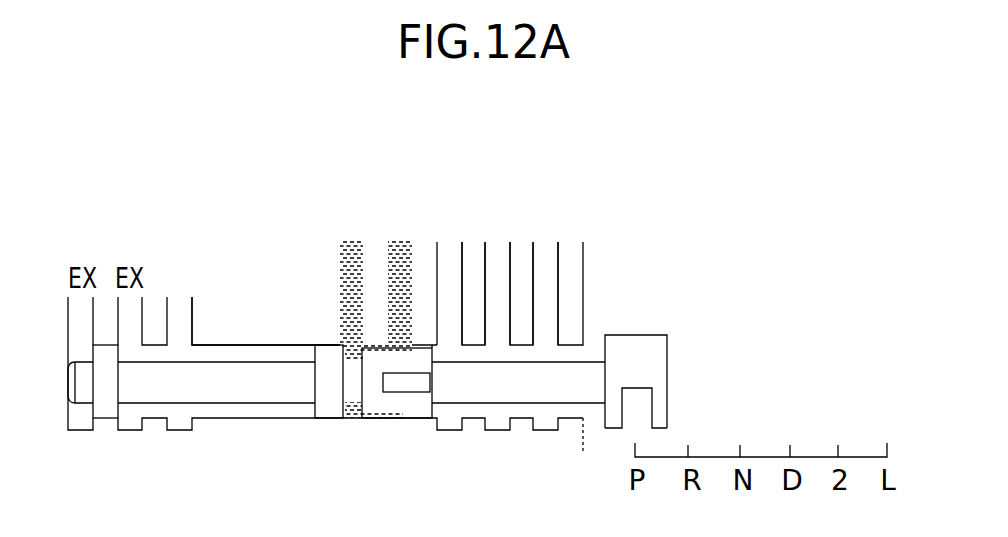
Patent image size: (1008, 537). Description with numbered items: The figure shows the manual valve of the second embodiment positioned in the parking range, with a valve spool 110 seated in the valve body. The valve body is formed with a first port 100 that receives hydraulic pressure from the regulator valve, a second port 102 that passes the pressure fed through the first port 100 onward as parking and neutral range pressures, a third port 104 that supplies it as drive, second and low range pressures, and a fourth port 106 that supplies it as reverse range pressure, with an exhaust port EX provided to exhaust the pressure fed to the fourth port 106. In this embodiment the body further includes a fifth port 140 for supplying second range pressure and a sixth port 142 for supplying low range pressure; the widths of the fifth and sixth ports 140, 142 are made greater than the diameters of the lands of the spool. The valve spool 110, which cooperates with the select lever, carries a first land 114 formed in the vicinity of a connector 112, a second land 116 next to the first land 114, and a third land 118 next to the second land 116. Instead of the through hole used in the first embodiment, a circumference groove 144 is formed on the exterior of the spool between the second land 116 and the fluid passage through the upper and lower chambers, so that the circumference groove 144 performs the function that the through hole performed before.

The first port 100 is at (340, 326).
The second port 102 is at (398, 330).
The third port 104 is at (450, 323).
The fourth port 106 is at (182, 332).
The valve spool 110 is at (694, 332).
The connector 112 is at (663, 422).
The first land 114 is at (420, 407).
The second land 116 is at (330, 407).
The third land 118 is at (108, 408).
The fifth port 140 is at (497, 330).
The sixth port 142 is at (547, 327).
The circumference groove 144 is at (353, 412).